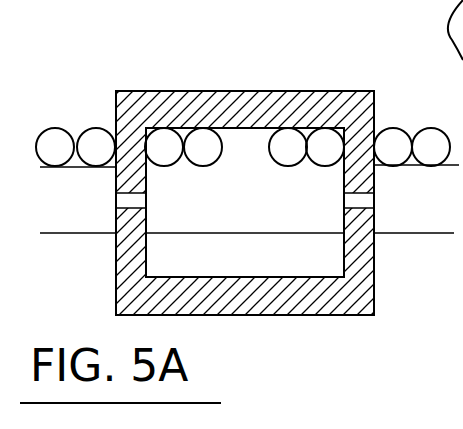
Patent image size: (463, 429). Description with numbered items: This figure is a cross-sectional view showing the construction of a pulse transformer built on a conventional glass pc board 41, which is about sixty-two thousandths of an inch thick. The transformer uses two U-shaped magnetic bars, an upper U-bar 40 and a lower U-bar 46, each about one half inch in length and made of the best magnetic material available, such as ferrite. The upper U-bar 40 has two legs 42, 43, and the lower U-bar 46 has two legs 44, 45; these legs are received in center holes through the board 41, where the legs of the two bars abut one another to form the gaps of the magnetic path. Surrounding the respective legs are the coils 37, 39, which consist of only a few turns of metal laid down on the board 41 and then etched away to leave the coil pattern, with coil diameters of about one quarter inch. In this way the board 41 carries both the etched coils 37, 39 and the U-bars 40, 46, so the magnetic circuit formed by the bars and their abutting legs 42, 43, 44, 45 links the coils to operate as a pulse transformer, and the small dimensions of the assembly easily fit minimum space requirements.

The coil 37 is at (55, 140).
The coil 39 is at (320, 138).
The U-bar 40 is at (269, 91).
The glass pc board 41 is at (254, 209).
The leg 42 is at (137, 115).
The leg 43 is at (137, 247).
The leg 44 is at (362, 173).
The leg 45 is at (365, 252).
The U-bar 46 is at (234, 315).